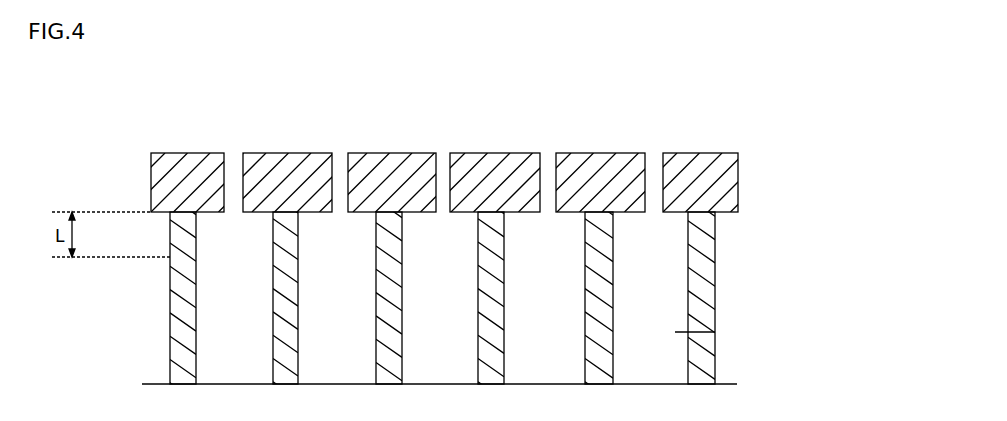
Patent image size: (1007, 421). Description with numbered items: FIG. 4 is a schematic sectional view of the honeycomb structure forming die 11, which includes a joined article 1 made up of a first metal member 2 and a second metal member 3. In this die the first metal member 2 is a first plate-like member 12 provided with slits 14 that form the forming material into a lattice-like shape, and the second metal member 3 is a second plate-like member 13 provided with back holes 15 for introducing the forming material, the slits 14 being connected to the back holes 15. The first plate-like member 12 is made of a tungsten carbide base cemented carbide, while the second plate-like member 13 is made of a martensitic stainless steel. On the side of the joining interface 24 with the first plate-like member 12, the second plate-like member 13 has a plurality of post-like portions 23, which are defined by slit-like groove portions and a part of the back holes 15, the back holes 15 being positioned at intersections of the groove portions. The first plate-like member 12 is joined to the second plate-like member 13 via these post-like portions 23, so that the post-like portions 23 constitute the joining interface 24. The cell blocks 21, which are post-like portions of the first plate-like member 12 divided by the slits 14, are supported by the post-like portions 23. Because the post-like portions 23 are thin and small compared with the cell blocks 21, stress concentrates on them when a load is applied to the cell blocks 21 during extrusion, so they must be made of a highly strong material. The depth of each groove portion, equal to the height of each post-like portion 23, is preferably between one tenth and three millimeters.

The joined article 1 is at (720, 257).
The first metal member 2 is at (715, 161).
The second metal member 3 is at (736, 299).
The honeycomb structure forming die 11 is at (670, 104).
The first plate-like member 12 is at (741, 160).
The second plate-like member 13 is at (713, 303).
The slit 14 is at (649, 153).
The back hole 15 is at (715, 332).
The cell block 21 is at (380, 152).
The post-like portion 23 is at (176, 238).
The joining interface 24 is at (171, 210).